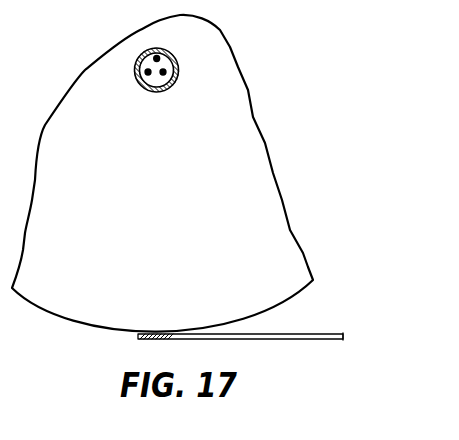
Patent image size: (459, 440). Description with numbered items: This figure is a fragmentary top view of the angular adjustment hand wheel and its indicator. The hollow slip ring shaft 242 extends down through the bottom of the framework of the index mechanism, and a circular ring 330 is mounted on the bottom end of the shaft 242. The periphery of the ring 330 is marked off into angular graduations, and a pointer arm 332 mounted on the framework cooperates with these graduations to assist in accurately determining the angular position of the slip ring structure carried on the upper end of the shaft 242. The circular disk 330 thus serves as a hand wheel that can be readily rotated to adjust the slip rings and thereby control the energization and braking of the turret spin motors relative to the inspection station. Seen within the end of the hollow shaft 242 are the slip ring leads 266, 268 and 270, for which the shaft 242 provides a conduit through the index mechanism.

The circular ring 330 is at (72, 307).
The pointer arm 332 is at (290, 340).
The hollow slip ring shaft 242 is at (165, 91).
The slip ring lead 266 is at (142, 83).
The slip ring lead 268 is at (158, 56).
The slip ring lead 270 is at (166, 72).